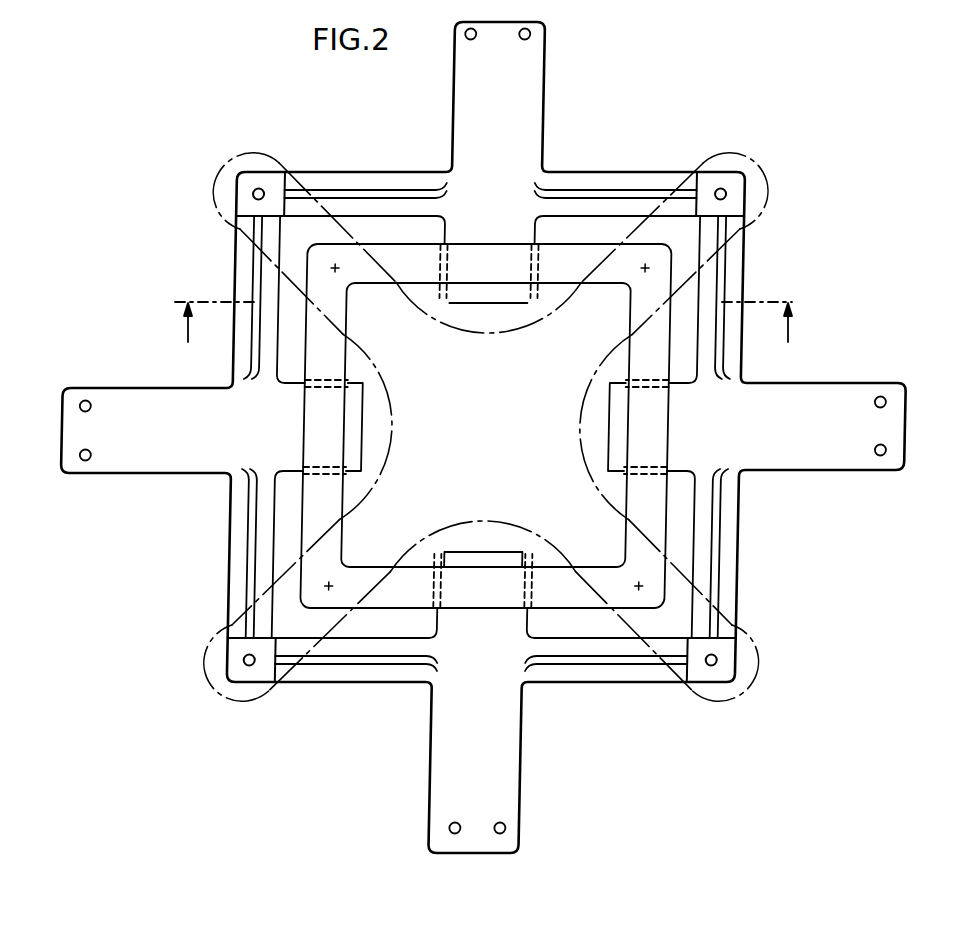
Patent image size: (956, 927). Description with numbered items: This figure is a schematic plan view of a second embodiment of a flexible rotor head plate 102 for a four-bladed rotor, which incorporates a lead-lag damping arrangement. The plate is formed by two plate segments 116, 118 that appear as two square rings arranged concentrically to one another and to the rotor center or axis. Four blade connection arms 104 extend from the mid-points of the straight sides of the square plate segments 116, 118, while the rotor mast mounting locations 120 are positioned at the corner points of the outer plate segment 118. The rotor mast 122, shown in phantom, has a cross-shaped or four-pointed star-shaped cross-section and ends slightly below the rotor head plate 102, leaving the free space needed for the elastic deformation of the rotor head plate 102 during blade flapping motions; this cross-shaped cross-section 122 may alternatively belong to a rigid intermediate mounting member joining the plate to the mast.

The flexible rotor head plate 102 is at (338, 150).
The blade connection arm 104 is at (483, 437).
The inner plate segment 116 is at (486, 427).
The outer plate segment 118 is at (486, 427).
The rotor mast mounting location 120 is at (486, 427).
The rotor mast 122 is at (460, 526).